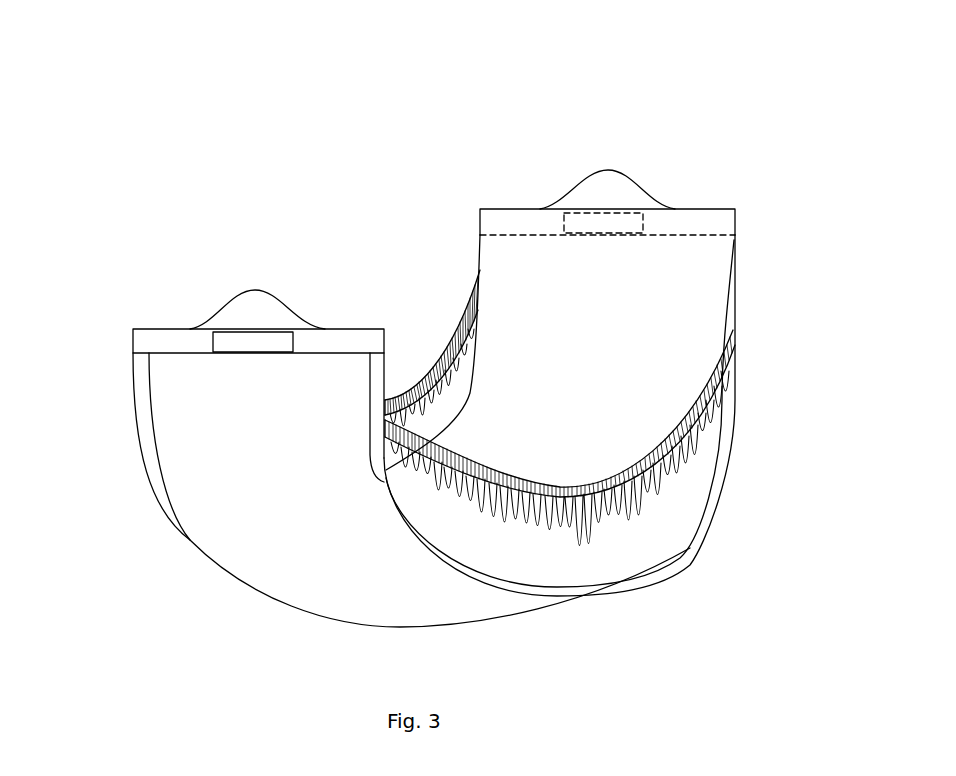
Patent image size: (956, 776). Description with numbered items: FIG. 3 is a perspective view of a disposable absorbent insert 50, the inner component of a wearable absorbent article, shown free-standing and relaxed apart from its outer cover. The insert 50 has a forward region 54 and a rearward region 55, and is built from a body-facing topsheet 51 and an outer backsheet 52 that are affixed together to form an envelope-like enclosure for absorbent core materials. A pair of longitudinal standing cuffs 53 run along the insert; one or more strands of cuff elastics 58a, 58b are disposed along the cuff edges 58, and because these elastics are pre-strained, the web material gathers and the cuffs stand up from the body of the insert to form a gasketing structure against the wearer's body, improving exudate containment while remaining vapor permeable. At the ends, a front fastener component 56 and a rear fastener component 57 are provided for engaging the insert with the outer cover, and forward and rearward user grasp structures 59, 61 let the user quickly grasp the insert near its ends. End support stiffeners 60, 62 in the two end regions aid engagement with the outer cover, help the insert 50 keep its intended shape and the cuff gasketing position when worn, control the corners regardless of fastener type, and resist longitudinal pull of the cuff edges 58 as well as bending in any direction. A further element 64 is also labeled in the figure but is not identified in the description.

The disposable absorbent insert 50 is at (407, 162).
The topsheet 51 is at (655, 300).
The backsheet 52 is at (245, 525).
The standing cuffs 53 is at (457, 372).
The forward region 54 is at (205, 472).
The rearward region 55 is at (529, 276).
The front fastener component 56 is at (228, 340).
The rear fastener component 57 is at (632, 222).
The cuff edges 58 is at (427, 387).
The cuff elastic 58a is at (697, 415).
The cuff elastic 58b is at (690, 452).
The forward user grasp structure 59 is at (255, 290).
The end support stiffener 60 is at (153, 342).
The rearward user grasp structure 61 is at (612, 172).
The end support stiffener 62 is at (720, 223).
The pouch bottom seam 64 is at (452, 572).